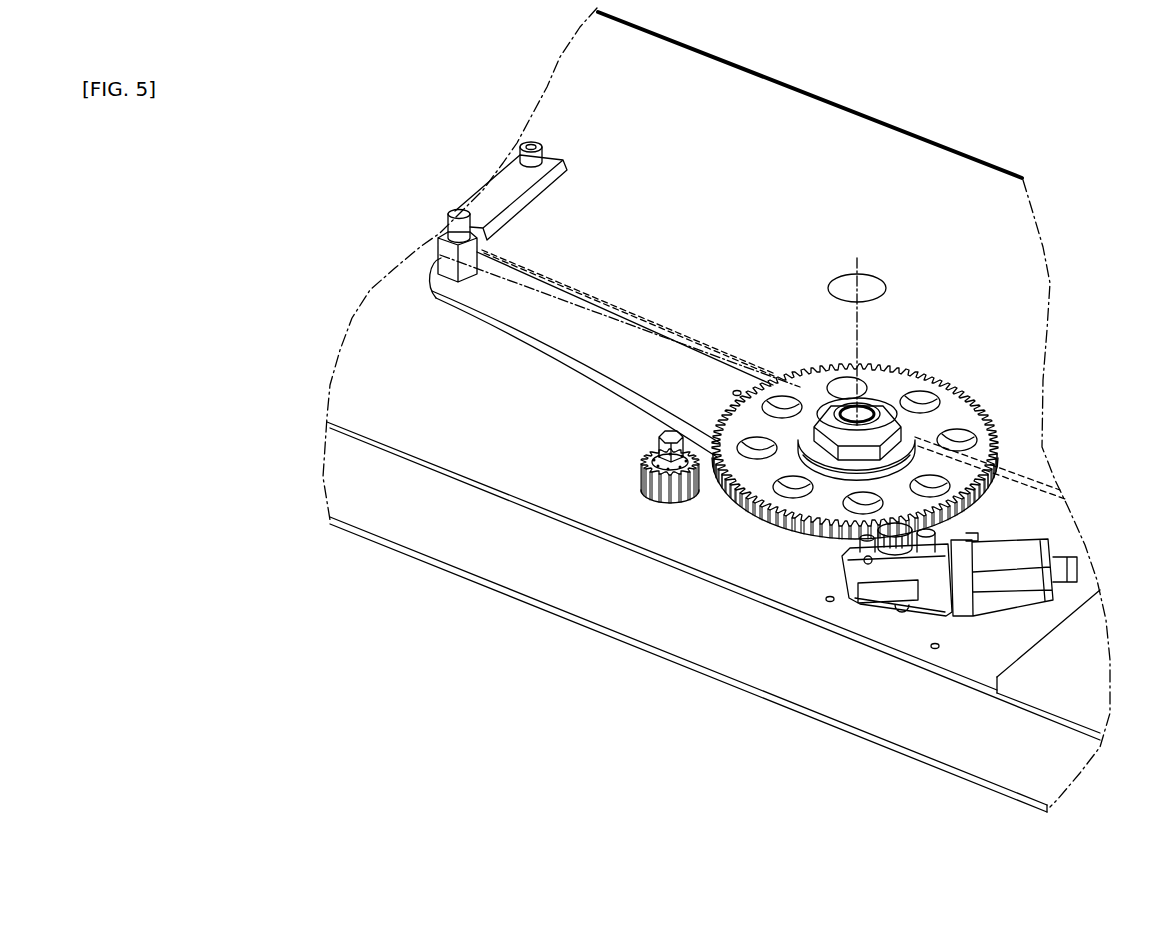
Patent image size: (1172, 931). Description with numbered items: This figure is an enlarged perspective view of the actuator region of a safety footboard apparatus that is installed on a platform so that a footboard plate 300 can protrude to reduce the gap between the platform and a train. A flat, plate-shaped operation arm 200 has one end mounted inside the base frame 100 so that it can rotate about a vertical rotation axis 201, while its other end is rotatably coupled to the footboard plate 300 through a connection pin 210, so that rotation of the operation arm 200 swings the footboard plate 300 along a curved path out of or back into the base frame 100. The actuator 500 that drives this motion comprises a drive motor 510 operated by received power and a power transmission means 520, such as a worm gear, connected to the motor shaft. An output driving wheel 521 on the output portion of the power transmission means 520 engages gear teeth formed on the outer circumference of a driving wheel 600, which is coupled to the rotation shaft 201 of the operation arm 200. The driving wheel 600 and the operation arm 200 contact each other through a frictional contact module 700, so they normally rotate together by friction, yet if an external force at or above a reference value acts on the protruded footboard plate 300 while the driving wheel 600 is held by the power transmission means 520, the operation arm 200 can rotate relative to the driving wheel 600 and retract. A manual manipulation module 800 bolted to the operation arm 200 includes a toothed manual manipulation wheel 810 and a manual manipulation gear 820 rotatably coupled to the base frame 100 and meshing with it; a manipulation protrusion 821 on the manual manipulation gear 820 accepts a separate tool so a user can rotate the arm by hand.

The base frame 100 is at (362, 484).
The operation arm 200 is at (540, 322).
The rotation axis 201 is at (862, 270).
The connection pin 210 is at (453, 213).
The footboard plate 300 is at (793, 137).
The actuator 500 is at (968, 649).
The drive motor 510 is at (990, 593).
The power transmission means 520 is at (870, 607).
The output driving wheel 521 is at (980, 498).
The driving wheel 600 is at (887, 536).
The frictional contact module 700 is at (897, 395).
The manual manipulation module 800 is at (578, 584).
The manual manipulation wheel 810 is at (750, 523).
The manual manipulation gear 820 is at (650, 500).
The manipulation protrusion 821 is at (667, 430).